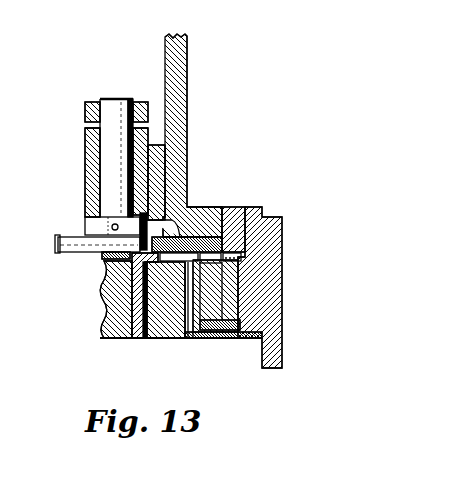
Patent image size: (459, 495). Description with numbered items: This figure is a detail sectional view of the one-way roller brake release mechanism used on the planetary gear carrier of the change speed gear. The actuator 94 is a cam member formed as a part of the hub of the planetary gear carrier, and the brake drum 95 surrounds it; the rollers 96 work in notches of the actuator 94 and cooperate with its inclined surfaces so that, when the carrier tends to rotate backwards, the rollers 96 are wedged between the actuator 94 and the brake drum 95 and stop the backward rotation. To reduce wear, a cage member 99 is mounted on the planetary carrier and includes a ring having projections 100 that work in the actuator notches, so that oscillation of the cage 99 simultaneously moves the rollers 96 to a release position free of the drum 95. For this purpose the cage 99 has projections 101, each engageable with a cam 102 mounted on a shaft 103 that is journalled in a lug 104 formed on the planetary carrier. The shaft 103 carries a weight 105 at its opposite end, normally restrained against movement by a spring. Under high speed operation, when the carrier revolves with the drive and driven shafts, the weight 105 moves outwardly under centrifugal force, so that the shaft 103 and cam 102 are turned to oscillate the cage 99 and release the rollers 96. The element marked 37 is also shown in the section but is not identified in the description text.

The wall plate 37 is at (182, 184).
The actuator 94 is at (253, 323).
The brake drum 95 is at (168, 318).
The rollers 96 is at (188, 300).
The cage member 99 is at (192, 246).
The projections 100 is at (222, 294).
The projections 101 is at (54, 247).
The cam 102 is at (83, 230).
The shaft 103 is at (110, 165).
The lug 104 is at (149, 164).
The weight 105 is at (84, 108).